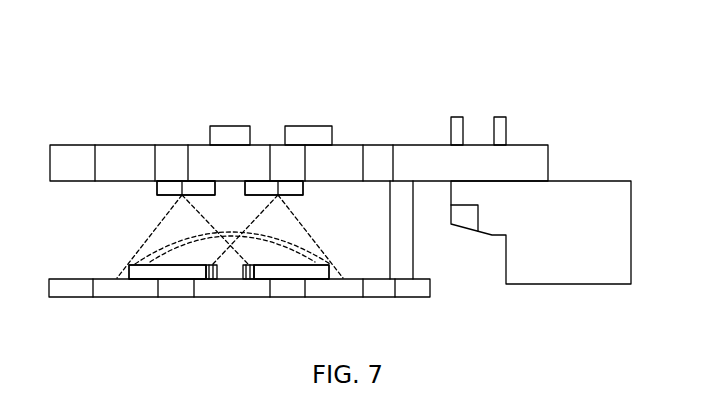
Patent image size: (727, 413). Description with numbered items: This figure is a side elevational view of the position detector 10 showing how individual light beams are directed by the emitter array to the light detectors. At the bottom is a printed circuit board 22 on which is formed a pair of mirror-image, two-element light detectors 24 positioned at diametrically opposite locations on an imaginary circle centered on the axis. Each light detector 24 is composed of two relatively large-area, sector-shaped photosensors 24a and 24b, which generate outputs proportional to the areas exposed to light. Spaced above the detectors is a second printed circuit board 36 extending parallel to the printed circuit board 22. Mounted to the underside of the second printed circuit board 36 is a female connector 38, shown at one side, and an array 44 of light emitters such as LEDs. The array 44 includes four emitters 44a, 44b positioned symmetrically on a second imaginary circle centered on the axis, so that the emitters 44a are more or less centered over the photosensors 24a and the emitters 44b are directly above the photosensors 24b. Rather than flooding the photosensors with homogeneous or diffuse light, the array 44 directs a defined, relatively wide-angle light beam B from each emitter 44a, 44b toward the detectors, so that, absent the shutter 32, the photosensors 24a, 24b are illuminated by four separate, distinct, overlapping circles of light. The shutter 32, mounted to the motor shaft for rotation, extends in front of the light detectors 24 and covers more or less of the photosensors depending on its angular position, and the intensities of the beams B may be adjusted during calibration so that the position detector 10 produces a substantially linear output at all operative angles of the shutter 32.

The position detector 10 is at (610, 67).
The printed circuit board 22 is at (63, 290).
The light detector 24 is at (118, 268).
The photosensor 24a is at (308, 280).
The photosensor 24b is at (148, 280).
The shutter 32 is at (293, 245).
The second printed circuit board 36 is at (137, 145).
The female connector 38 is at (615, 229).
The array of light emitters 44 is at (111, 195).
The light emitter 44a is at (201, 184).
The light emitter 44b is at (292, 186).
The light beam B is at (145, 233).